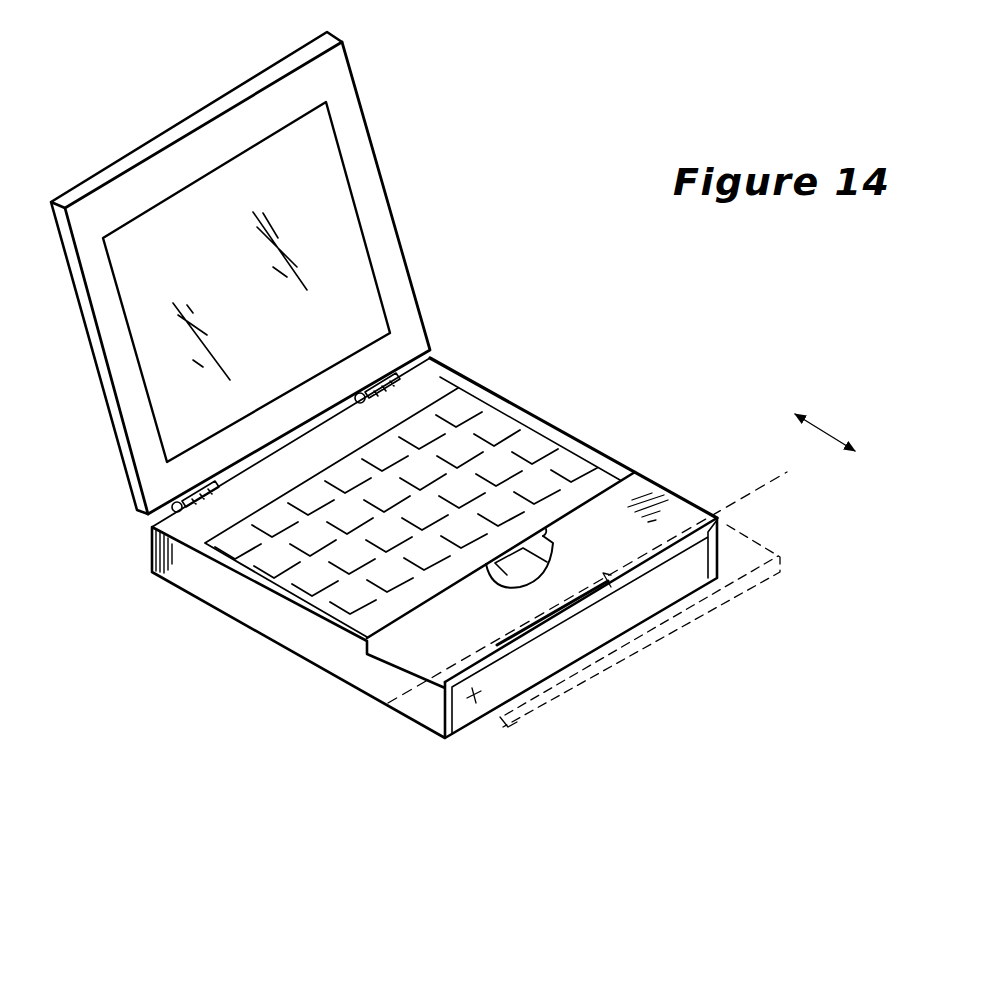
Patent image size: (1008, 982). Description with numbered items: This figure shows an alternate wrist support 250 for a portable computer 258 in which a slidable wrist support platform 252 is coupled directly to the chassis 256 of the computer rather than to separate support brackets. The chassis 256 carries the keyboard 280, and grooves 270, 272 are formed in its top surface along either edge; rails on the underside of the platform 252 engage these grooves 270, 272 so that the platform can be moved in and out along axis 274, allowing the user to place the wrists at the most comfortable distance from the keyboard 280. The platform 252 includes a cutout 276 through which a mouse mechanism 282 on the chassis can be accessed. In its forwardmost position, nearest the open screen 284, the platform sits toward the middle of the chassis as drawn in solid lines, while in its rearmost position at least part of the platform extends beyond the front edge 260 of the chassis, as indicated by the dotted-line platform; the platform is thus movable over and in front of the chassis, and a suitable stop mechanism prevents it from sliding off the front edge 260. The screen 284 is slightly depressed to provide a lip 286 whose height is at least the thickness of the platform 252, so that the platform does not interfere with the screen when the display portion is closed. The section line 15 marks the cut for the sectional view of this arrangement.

The section line 15- 15 is at (388, 703).
The wrist support 250 is at (694, 447).
The wrist support platform 252 is at (673, 512).
The chassis 256 is at (195, 583).
The portable computer 258 is at (509, 394).
The front edge 260 is at (478, 688).
The groove 270 is at (325, 623).
The groove 272 is at (612, 457).
The axis 274 is at (832, 437).
The cutout 276 is at (552, 541).
The keyboard 280 is at (460, 412).
The mouse mechanism 282 is at (513, 567).
The screen 284 is at (338, 221).
The lip 286 is at (402, 245).